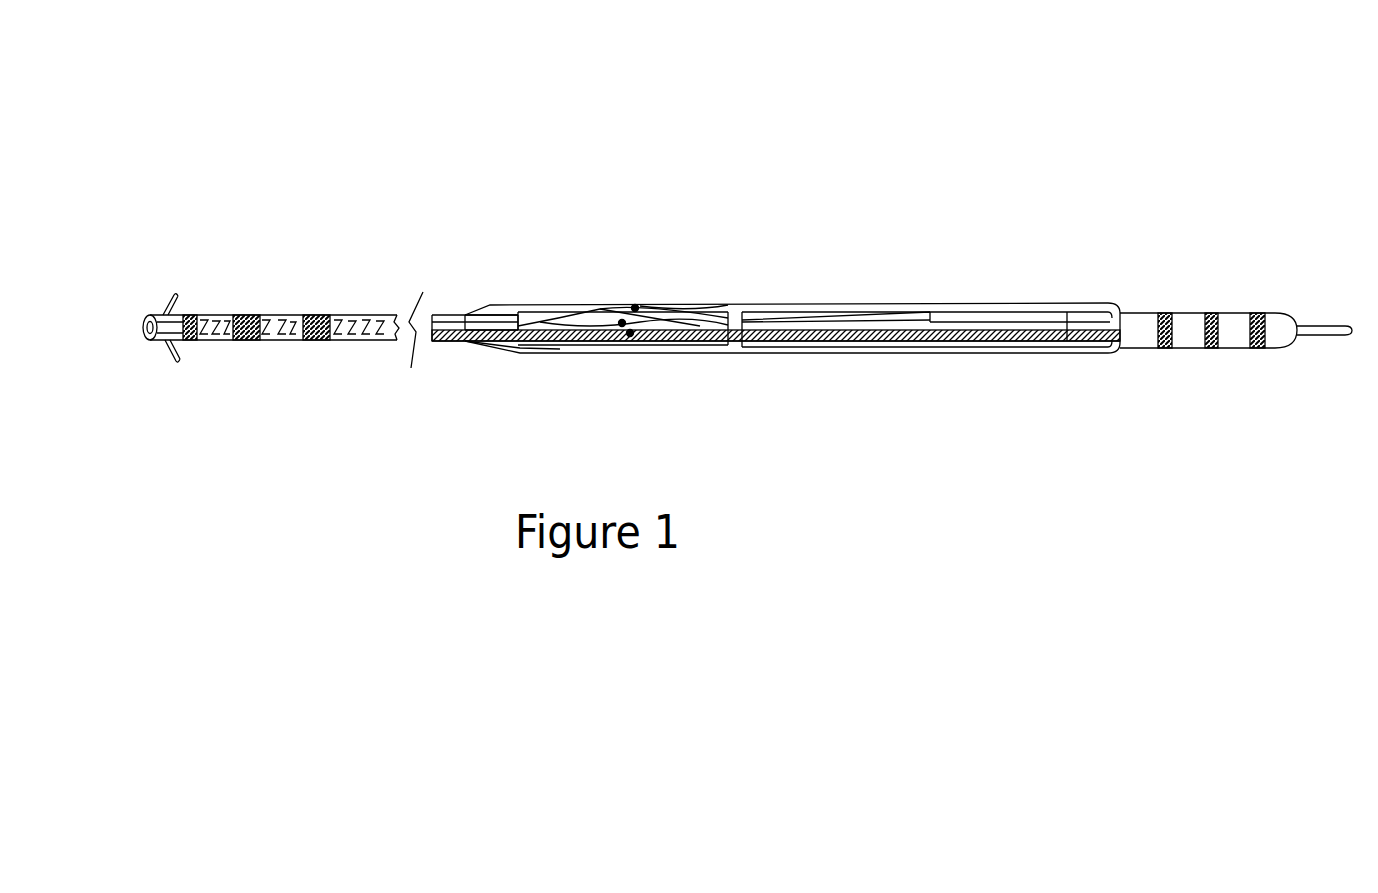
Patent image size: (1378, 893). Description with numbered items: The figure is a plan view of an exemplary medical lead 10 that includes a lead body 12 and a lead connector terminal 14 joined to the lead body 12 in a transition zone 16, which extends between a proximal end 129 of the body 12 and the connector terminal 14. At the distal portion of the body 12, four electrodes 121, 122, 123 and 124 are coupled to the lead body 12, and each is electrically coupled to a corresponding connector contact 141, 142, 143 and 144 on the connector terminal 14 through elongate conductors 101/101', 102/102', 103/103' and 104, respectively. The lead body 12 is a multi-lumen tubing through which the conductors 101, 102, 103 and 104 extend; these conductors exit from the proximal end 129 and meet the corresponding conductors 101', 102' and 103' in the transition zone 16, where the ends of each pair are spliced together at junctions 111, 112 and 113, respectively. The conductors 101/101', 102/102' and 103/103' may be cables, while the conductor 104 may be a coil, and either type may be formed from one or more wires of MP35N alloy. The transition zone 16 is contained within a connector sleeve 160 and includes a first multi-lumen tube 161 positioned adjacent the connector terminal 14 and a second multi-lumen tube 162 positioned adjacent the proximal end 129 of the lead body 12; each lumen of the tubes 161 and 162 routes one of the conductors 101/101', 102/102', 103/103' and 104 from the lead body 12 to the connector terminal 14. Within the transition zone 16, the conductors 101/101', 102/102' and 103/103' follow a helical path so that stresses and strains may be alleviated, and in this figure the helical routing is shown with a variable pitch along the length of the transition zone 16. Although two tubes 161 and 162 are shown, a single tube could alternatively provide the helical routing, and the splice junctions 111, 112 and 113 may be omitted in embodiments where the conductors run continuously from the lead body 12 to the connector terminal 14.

The medical lead 10 is at (691, 124).
The lead body 12 is at (392, 317).
The lead connector terminal 14 is at (1118, 288).
The transition zone 16 is at (1120, 383).
The elongate conductor 101 is at (530, 313).
The elongate conductor 102 is at (495, 280).
The elongate conductor 103 is at (651, 357).
The elongate conductor 104 is at (200, 320).
The splice junction 111 is at (620, 326).
The splice junction 112 is at (635, 306).
The splice junction 113 is at (630, 336).
The electrode 121 is at (325, 320).
The electrode 122 is at (233, 320).
The electrode 123 is at (180, 318).
The electrode 124 is at (142, 326).
The proximal end 129 is at (522, 345).
The connector contact 141 is at (1165, 349).
The connector contact 142 is at (1212, 349).
The connector contact 143 is at (1258, 349).
The connector contact 144 is at (1322, 336).
The connector sleeve 160 is at (522, 303).
The first multi-lumen tube 161 is at (788, 318).
The second multi-lumen tube 162 is at (680, 318).
The elongate conductor 101' is at (836, 352).
The elongate conductor 102' is at (1060, 348).
The elongate conductor 103' is at (998, 353).